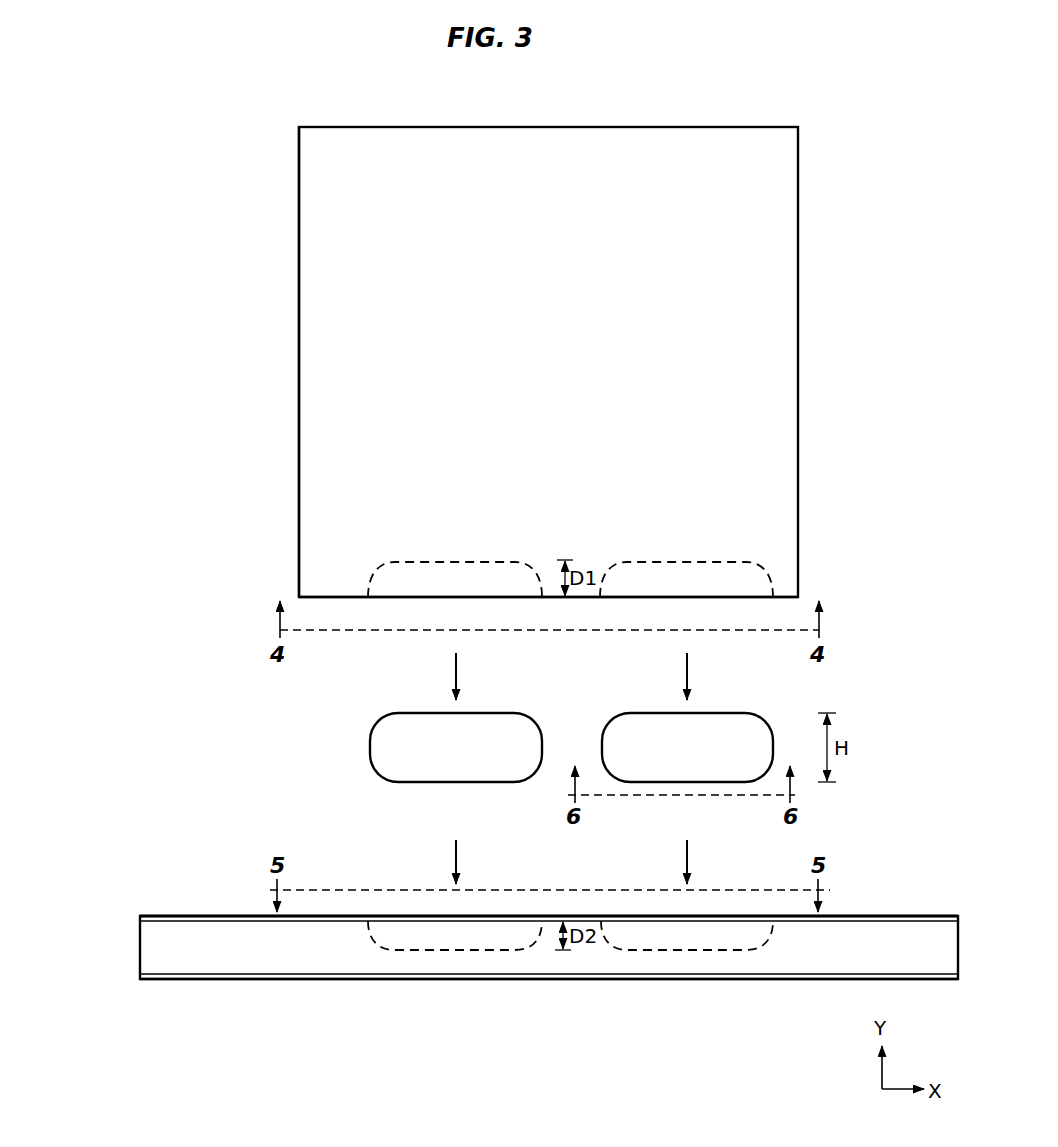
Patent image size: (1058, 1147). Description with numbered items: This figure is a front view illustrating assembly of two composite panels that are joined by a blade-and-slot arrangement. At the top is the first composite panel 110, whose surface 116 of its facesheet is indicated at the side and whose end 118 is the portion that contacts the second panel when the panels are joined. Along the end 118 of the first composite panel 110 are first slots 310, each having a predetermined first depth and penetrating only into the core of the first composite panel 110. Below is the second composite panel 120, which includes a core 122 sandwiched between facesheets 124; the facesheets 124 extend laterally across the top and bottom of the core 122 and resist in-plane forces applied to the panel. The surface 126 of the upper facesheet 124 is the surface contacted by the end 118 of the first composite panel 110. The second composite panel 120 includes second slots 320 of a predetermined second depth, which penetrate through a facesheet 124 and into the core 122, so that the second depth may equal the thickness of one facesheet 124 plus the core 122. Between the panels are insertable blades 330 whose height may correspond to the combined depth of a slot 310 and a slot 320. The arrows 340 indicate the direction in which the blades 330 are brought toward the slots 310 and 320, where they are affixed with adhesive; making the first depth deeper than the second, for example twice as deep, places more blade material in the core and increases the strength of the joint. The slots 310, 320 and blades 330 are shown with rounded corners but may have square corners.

The first composite panel 110 is at (834, 375).
The surface 116 is at (329, 384).
The end 118 is at (325, 597).
The first slot 310 is at (446, 562).
The insertable blade 330 is at (370, 745).
The pressing direction 340 is at (456, 668).
The second slot 320 is at (392, 950).
The second composite panel 120 is at (78, 876).
The core 122 is at (131, 922).
The facesheets 124 is at (148, 916).
The surface 126 is at (200, 913).